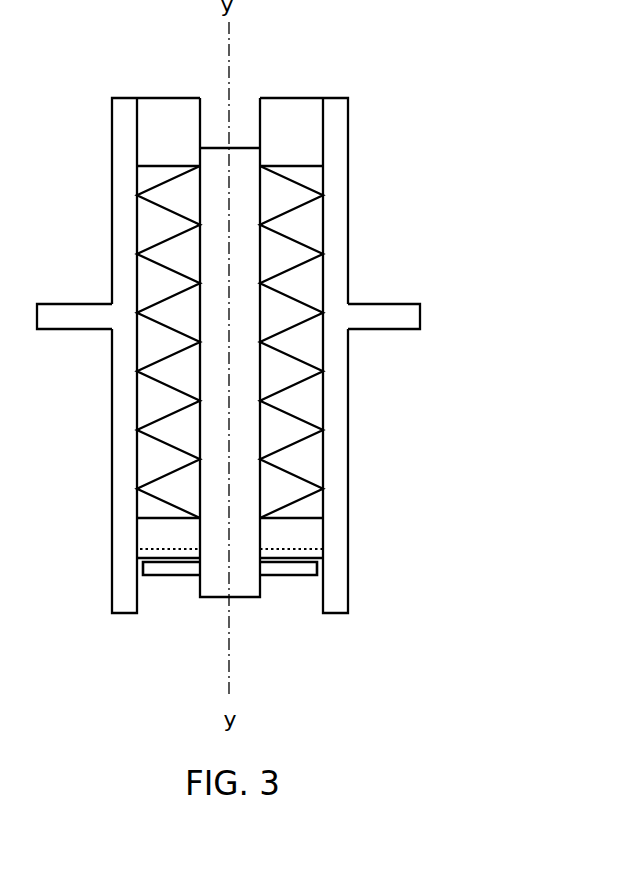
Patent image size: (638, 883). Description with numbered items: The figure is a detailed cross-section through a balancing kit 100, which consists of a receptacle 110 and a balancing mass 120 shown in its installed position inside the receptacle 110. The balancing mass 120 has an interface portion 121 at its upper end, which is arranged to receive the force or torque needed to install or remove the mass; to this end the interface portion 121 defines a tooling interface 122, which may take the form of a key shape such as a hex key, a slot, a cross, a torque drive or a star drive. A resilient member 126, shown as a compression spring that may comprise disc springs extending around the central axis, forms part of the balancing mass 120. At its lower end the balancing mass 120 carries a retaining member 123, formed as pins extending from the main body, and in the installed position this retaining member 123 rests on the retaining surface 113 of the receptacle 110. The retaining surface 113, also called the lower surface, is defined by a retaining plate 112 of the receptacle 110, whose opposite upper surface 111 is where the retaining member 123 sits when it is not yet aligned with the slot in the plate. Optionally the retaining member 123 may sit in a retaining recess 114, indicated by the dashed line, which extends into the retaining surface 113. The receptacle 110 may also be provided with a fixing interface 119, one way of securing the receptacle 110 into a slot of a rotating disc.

The balancing kit 100 is at (398, 120).
The receptacle 110 is at (350, 570).
The upper surface 111 is at (313, 512).
The retaining plate 112 is at (158, 532).
The retaining surface 113 is at (316, 562).
The retaining recess 114 is at (140, 550).
The fixing interface 119 is at (407, 315).
The balancing mass 120 is at (243, 433).
The interface portion 121 is at (308, 137).
The tooling interface 122 is at (243, 118).
The retaining member 123 is at (295, 568).
The resilient member 126 is at (308, 242).